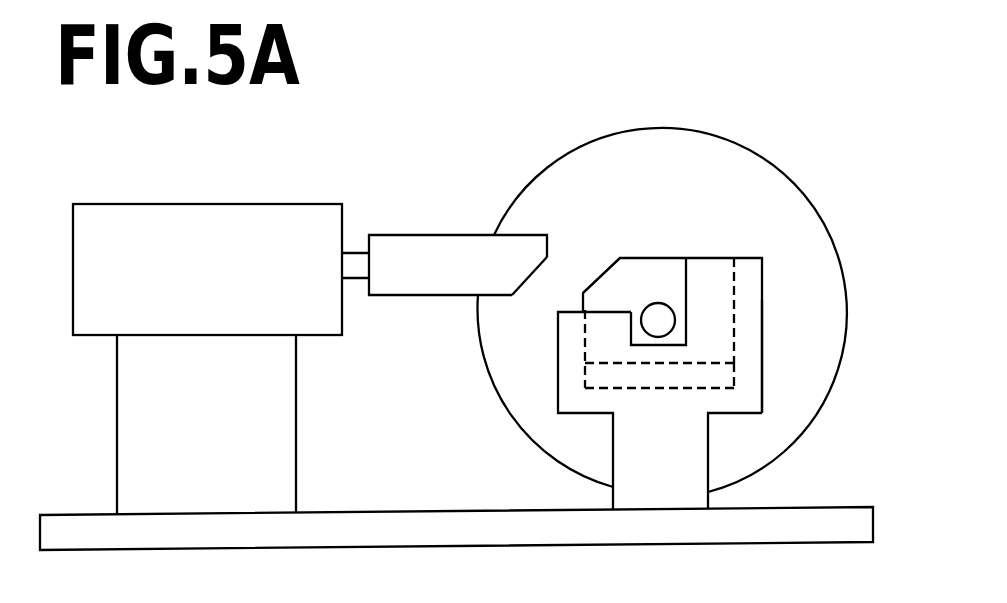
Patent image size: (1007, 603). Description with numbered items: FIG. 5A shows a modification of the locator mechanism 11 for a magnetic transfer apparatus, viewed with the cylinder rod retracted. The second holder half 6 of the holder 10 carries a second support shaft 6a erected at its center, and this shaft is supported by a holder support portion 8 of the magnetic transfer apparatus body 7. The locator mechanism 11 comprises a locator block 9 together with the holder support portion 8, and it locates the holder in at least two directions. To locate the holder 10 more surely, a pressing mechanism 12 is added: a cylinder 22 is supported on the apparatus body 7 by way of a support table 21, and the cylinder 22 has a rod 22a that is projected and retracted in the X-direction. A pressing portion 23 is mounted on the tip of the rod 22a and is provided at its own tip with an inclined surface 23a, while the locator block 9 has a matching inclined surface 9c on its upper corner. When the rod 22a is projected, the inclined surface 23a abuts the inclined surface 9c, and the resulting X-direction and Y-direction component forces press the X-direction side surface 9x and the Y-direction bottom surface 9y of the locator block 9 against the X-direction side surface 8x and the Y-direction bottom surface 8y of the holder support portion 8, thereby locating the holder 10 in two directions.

The second holder half 6 is at (612, 143).
The second support shaft 6a is at (674, 320).
The magnetic transfer apparatus body 7 is at (392, 512).
The holder support portion 8 is at (765, 398).
The X-direction side surface 8x is at (733, 283).
The Y-direction bottom surface 8y is at (637, 387).
The locator block 9 is at (668, 257).
The inclined surface 9c is at (595, 282).
The X-direction side surface 9x is at (735, 272).
The Y-direction bottom surface 9y is at (590, 386).
The holder 10 is at (722, 131).
The locator mechanism 11 is at (787, 345).
The pressing mechanism 12 is at (300, 181).
The support table 21 is at (120, 400).
The cylinder 22 is at (178, 215).
The rod 22a is at (358, 250).
The pressing portion 23 is at (437, 286).
The inclined surface 23a is at (536, 270).